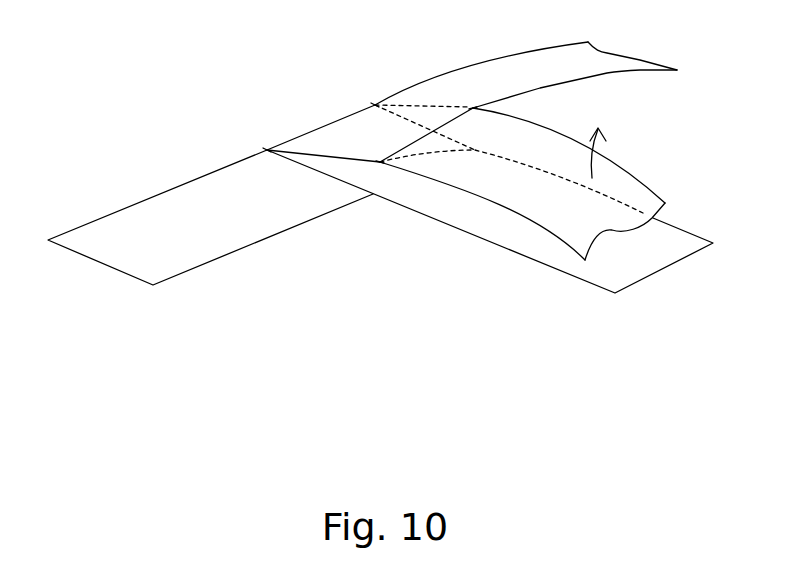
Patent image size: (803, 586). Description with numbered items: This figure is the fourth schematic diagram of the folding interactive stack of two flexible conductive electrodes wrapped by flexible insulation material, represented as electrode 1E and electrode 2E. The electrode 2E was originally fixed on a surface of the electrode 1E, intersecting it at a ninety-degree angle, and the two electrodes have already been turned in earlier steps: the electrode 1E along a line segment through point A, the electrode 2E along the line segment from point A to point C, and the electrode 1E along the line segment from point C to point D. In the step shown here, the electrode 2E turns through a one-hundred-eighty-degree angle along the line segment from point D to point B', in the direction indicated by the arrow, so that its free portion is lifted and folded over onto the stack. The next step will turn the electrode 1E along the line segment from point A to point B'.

The electrode 1E is at (212, 243).
The electrode 2E is at (613, 270).
The point A is at (375, 105).
The point B' is at (493, 133).
The point C is at (265, 149).
The point D is at (382, 167).